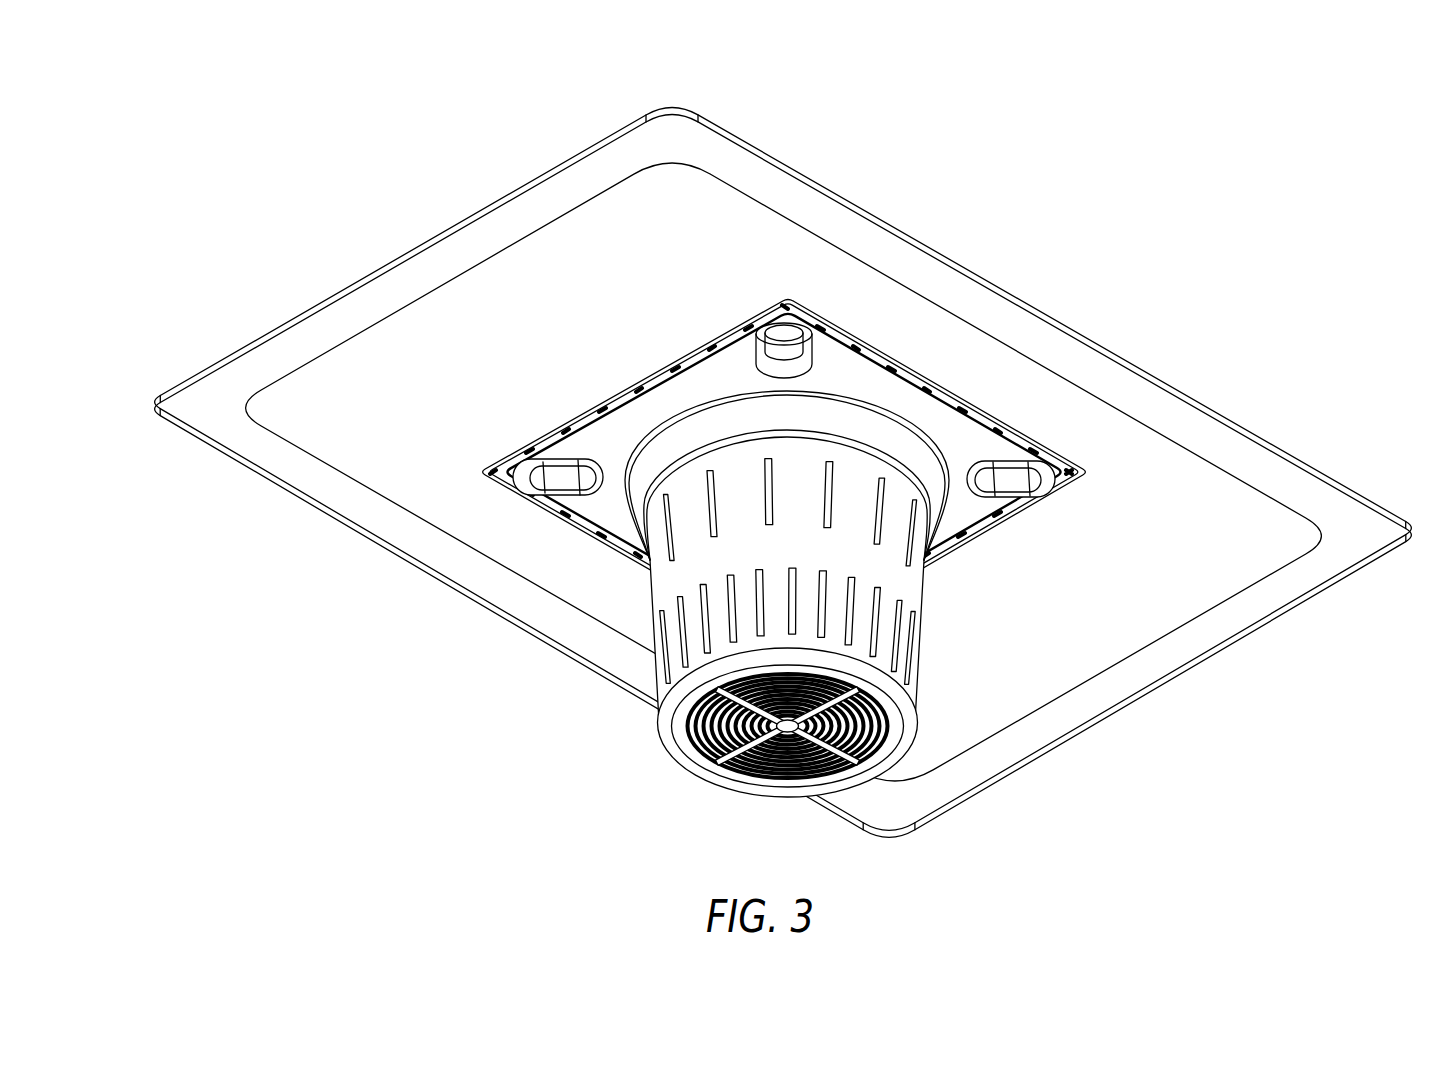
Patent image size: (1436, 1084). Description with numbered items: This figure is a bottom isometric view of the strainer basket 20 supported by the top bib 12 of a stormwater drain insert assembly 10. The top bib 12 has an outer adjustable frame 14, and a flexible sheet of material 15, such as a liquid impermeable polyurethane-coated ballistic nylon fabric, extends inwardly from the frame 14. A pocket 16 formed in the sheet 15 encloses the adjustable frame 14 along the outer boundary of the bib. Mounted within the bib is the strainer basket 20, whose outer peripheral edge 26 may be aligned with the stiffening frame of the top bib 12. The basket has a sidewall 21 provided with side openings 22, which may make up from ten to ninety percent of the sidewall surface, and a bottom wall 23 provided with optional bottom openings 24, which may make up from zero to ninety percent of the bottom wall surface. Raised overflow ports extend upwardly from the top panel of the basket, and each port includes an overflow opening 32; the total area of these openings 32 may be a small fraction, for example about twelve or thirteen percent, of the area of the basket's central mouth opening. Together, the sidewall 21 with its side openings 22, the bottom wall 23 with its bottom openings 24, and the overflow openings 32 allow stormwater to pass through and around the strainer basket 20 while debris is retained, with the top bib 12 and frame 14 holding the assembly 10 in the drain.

The stormwater drain insert assembly 10 is at (783, 448).
The top bib 12 is at (783, 472).
The outer adjustable frame 14 is at (215, 455).
The flexible sheet of material 15 is at (497, 290).
The pocket 16 is at (210, 400).
The strainer basket 20 is at (812, 611).
The sidewall 21 is at (668, 592).
The side openings 22 is at (668, 540).
The bottom wall 23 is at (682, 748).
The bottom openings 24 is at (770, 785).
The outer peripheral edge 26 is at (618, 390).
The overflow opening 32 is at (780, 333).